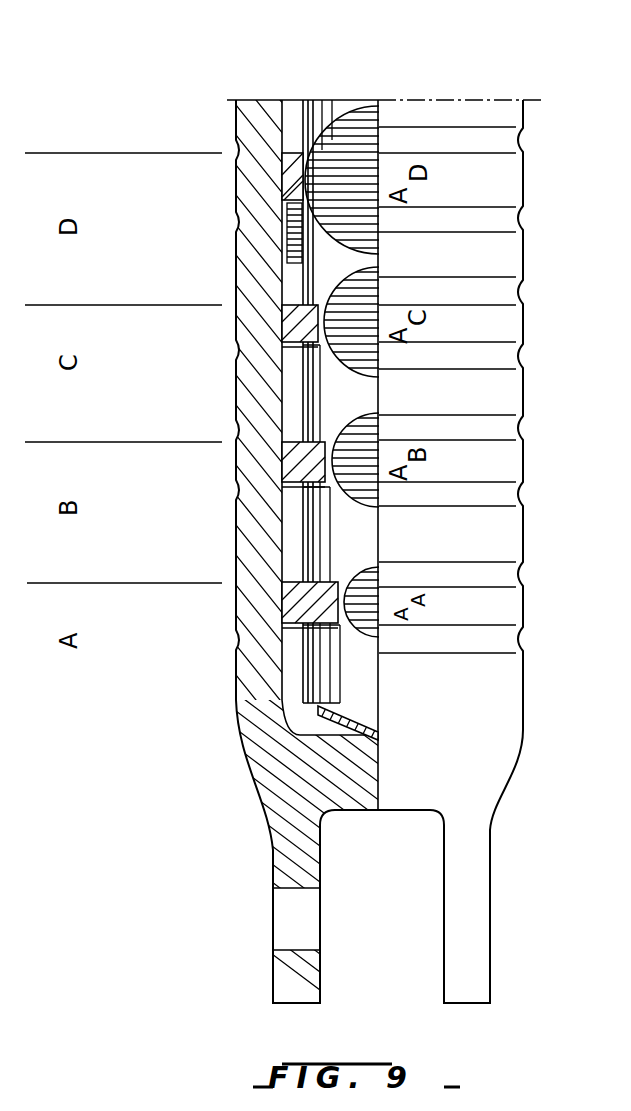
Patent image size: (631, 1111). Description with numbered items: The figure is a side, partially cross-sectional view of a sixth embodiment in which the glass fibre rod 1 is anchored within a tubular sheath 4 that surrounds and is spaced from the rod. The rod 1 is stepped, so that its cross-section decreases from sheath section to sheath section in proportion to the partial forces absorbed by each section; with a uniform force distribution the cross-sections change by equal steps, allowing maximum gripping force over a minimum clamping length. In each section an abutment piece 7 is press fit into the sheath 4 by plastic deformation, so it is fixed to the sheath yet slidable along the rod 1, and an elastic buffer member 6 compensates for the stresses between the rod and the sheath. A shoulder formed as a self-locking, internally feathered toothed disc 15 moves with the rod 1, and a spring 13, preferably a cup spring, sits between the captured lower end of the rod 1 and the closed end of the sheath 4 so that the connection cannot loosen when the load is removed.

The glass fibre rod 1 is at (332, 100).
The tubular sheath 4 is at (253, 668).
The elastic buffer member 6 is at (287, 350).
The abutment piece 7 is at (246, 148).
The spring 13 is at (318, 712).
The toothed disc 15 is at (287, 245).